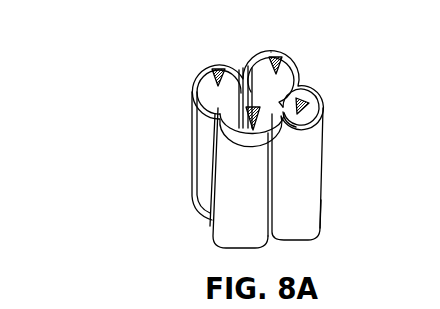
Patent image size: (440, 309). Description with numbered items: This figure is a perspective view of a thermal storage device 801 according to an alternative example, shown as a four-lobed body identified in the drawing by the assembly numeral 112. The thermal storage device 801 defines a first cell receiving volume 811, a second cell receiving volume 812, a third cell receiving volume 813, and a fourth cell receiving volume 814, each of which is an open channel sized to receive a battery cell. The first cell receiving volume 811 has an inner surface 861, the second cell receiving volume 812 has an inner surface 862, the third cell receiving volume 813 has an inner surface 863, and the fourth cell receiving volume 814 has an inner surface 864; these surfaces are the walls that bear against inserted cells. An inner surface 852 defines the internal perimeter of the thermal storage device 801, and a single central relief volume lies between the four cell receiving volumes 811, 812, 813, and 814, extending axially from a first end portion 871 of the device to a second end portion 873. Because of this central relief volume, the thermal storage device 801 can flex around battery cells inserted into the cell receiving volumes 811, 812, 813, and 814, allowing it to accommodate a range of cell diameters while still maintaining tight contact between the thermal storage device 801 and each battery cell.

The multi-lumen tubing assembly 112 is at (120, 69).
The thermal storage device 801 is at (195, 120).
The first cell receiving volume 811 is at (222, 66).
The second cell receiving volume 812 is at (287, 57).
The third cell receiving volume 813 is at (317, 106).
The fourth cell receiving volume 814 is at (226, 126).
The inner surface 852 is at (308, 102).
The inner surface 861 is at (220, 62).
The inner surface 862 is at (268, 55).
The inner surface 863 is at (302, 87).
The inner surface 864 is at (220, 116).
The first end portion 871 is at (304, 126).
The second end portion 873 is at (322, 222).